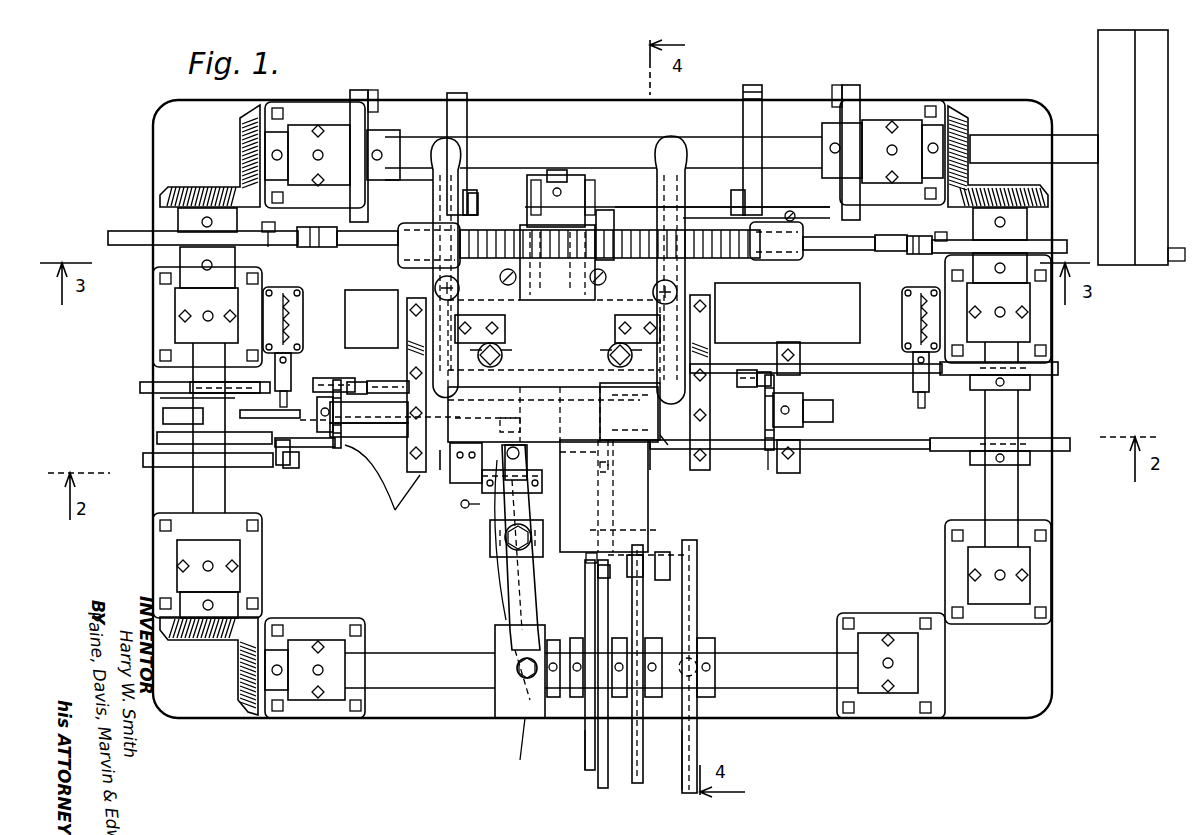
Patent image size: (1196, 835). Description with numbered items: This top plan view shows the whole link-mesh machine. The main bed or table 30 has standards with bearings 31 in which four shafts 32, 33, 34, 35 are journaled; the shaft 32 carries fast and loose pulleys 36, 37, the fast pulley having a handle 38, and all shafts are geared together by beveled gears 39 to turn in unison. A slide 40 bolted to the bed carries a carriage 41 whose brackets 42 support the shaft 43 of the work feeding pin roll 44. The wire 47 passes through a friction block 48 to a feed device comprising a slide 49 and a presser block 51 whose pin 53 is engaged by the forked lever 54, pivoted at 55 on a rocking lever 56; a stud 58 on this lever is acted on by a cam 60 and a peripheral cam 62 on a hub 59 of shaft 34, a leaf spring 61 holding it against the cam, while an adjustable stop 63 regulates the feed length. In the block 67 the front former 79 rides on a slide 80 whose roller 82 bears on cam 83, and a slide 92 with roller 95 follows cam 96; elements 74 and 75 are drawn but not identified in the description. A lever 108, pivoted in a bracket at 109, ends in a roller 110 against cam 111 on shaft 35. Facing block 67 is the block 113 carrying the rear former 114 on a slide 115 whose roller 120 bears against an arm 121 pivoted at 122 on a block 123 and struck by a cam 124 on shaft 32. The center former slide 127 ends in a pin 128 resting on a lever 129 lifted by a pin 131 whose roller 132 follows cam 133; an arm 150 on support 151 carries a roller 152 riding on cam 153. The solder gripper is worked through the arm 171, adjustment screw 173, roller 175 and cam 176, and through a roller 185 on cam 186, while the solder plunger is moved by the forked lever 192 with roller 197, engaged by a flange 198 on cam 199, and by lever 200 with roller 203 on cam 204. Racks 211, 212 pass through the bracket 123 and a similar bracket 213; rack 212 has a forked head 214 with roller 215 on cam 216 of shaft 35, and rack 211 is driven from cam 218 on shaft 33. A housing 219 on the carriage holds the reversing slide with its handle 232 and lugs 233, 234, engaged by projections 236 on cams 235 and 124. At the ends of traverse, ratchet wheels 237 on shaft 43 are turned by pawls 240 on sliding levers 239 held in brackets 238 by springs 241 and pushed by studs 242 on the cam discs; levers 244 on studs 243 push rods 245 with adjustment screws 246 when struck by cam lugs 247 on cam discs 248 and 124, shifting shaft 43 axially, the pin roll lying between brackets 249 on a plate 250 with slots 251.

The main bed 30 is at (545, 135).
The bearings 31 is at (300, 127).
The shaft 32 is at (540, 158).
The shaft 33 is at (193, 497).
The shaft 34 is at (805, 688).
The shaft 35 is at (1018, 492).
The fast pulley 36 is at (1160, 55).
The loose pulley 37 is at (1098, 44).
The handle 38 is at (1176, 248).
The beveled gears 39 is at (250, 118).
The slide 40 is at (855, 283).
The carriage 41 is at (790, 260).
The brackets 42 is at (405, 448).
The shaft 43 is at (742, 415).
The work feeding pin roll 44 is at (655, 450).
The wire 47 is at (440, 455).
The friction block 48 is at (456, 483).
The slide 49 is at (550, 468).
The presser block 51 is at (490, 440).
The pin 53 is at (512, 418).
The lever 54 is at (508, 510).
The pivot 55 is at (499, 548).
The rocking lever 56 is at (532, 525).
The stud 58 is at (524, 678).
The hub 59 is at (522, 720).
The cam 60 is at (535, 612).
The leaf spring 61 is at (482, 540).
The peripheral cam 62 is at (498, 700).
The adjustable stop 63 is at (463, 508).
The block 67 is at (640, 500).
The rod 74 is at (583, 555).
The rod 75 is at (585, 736).
The front former 79 is at (598, 466).
The slide 80 is at (604, 482).
The roller 82 is at (608, 578).
The cam 83 is at (608, 635).
The slide 92 is at (660, 555).
The roller 95 is at (644, 576).
The cam 96 is at (643, 600).
The lever 108 is at (900, 450).
The bracket pivot 109 is at (810, 455).
The roller 110 is at (1030, 452).
The cam 111 is at (1060, 438).
The block 113 is at (580, 366).
The rear former 114 is at (578, 440).
The slide 115 is at (600, 302).
The roller 120 is at (604, 210).
The arm 121 is at (690, 216).
The pivot 122 is at (795, 214).
The block 123 is at (790, 260).
The cam 124 is at (758, 113).
The slide 127 is at (612, 442).
The pin 128 is at (608, 425).
The lever 129 is at (697, 598).
The pin 131 is at (710, 672).
The roller 132 is at (686, 680).
The cam 133 is at (697, 745).
The arm 150 is at (830, 373).
The support 151 is at (800, 358).
The roller 152 is at (1030, 384).
The cam 153 is at (1058, 364).
The arm 171 is at (350, 500).
The adjustment screw 173 is at (298, 455).
The roller 175 is at (283, 465).
The cam 176 is at (252, 467).
The roller 185 is at (195, 383).
The cam 186 is at (145, 388).
The lever 192 is at (280, 418).
The roller 197 is at (255, 410).
The flange 198 is at (163, 418).
The cam 199 is at (160, 398).
The lever 200 is at (350, 445).
The roller 203 is at (287, 442).
The cam 204 is at (157, 440).
The rack 211 is at (494, 232).
The rack 212 is at (478, 205).
The bracket 213 is at (408, 223).
The forked head 214 is at (888, 235).
The roller 215 is at (916, 236).
The cam 216 is at (960, 240).
The cam 218 is at (300, 250).
The housing 219 is at (560, 300).
The handle 232 is at (557, 190).
The lug 233 is at (536, 184).
The lug 234 is at (594, 190).
The cam 235 is at (462, 113).
The projection 236 is at (470, 190).
The ratchet wheels 237 is at (338, 448).
The brackets 238 is at (300, 318).
The sliding levers 239 is at (292, 358).
The pawls 240 is at (300, 396).
The springs 241 is at (290, 297).
The studs 242 is at (940, 232).
The stud 243 is at (459, 288).
The lever 244 is at (442, 160).
The rod 245 is at (728, 396).
The adjustment screw 246 is at (357, 382).
The cam lugs 247 is at (376, 92).
The cam disc 248 is at (356, 92).
The brackets 249 is at (533, 467).
The plate 250 is at (555, 300).
The slots 251 is at (505, 350).